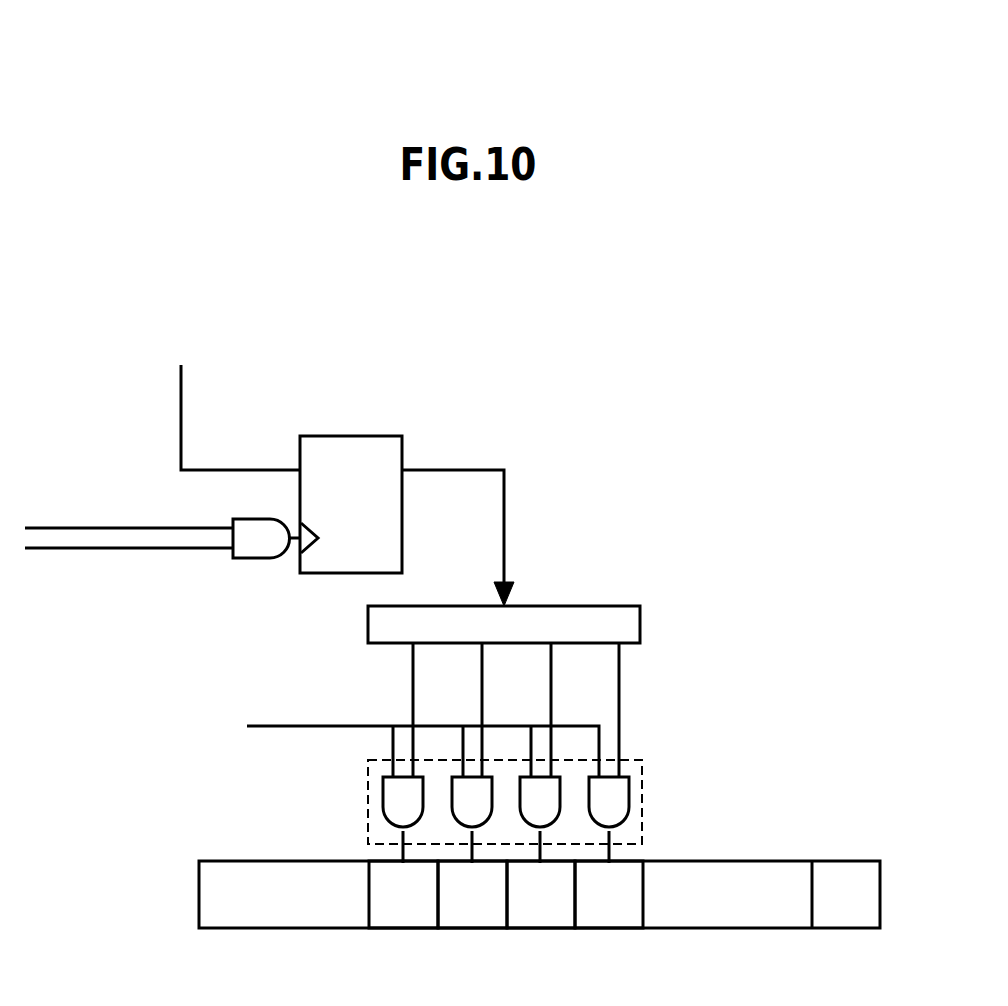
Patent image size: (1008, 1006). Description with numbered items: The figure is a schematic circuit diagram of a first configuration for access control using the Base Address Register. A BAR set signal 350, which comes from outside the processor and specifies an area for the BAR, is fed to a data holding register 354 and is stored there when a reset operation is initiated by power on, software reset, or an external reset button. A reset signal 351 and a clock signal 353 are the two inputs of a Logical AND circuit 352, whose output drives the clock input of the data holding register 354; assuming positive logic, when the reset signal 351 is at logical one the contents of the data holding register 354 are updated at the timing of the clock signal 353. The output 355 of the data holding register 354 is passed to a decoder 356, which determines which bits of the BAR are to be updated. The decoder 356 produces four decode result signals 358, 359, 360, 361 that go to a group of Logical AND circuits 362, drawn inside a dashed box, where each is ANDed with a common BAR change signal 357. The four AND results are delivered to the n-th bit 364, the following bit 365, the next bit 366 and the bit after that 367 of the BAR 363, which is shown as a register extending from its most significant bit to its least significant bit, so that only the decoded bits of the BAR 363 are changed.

The BAR set signal 350 is at (181, 410).
The reset signal 351 is at (165, 526).
The Logical AND circuit 352 is at (258, 560).
The clock signal 353 is at (165, 550).
The data holding register 354 is at (370, 436).
The output 355 is at (483, 470).
The decoder 356 is at (597, 606).
The BAR change signal 357 is at (264, 726).
The decode result signal 358 is at (619, 700).
The decode result signal 359 is at (551, 700).
The decode result signal 360 is at (482, 700).
The decode result signal 361 is at (413, 700).
The group of Logical AND circuits 362 is at (642, 785).
The BAR 363 is at (775, 861).
The n-th bit 364 is at (590, 928).
The n+1-th bit 365 is at (522, 928).
The n+2-th bit 366 is at (453, 928).
The n+3-th bit 367 is at (385, 928).